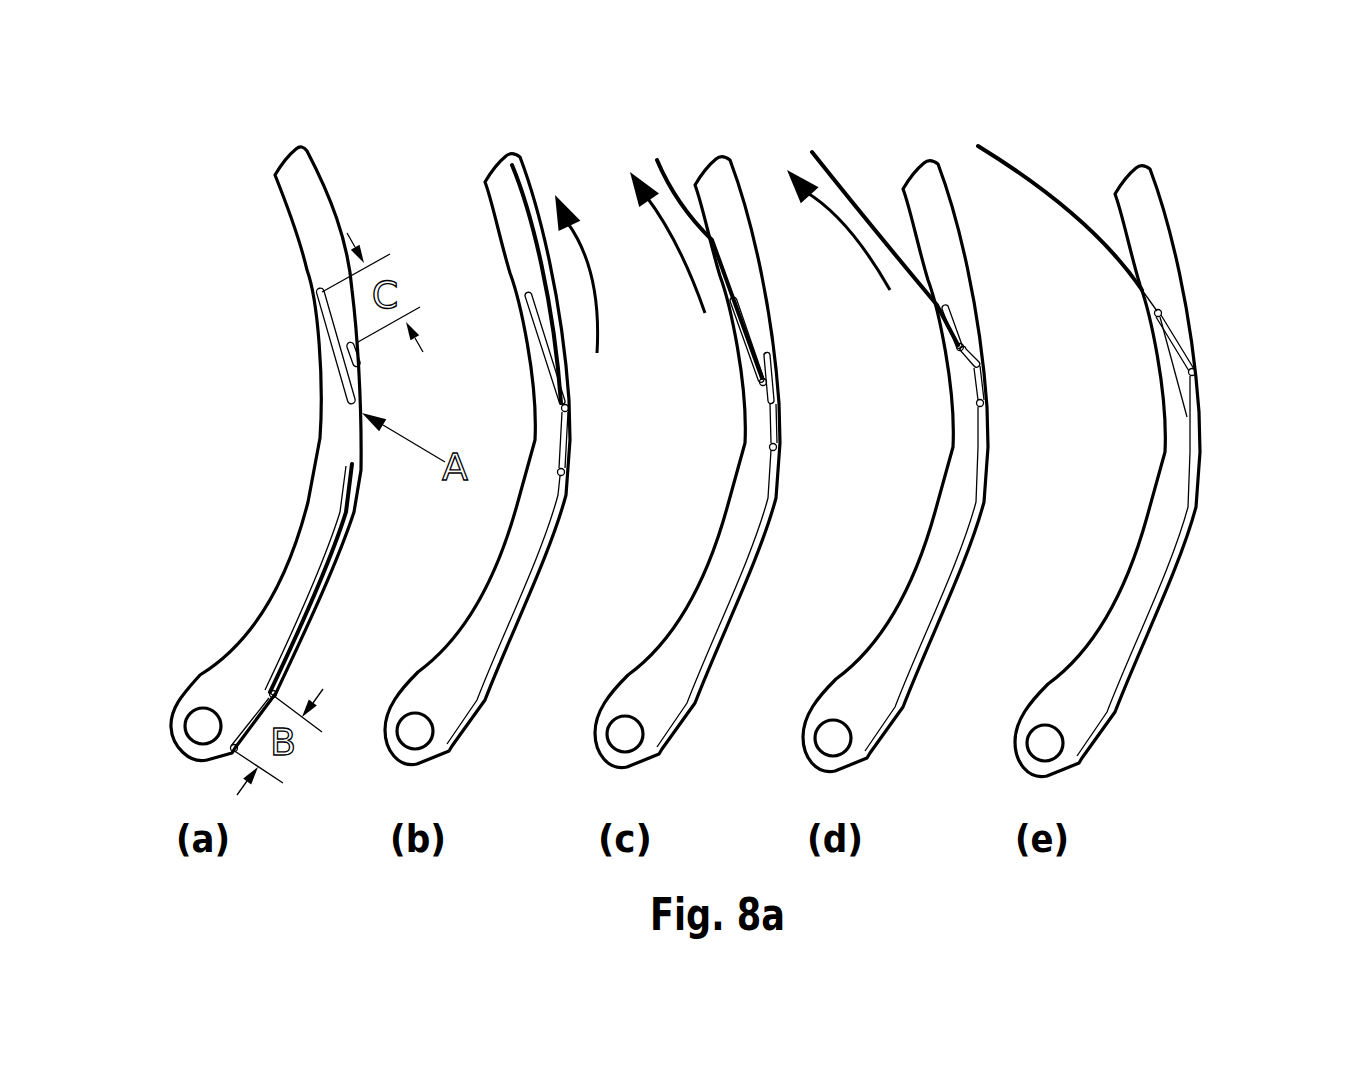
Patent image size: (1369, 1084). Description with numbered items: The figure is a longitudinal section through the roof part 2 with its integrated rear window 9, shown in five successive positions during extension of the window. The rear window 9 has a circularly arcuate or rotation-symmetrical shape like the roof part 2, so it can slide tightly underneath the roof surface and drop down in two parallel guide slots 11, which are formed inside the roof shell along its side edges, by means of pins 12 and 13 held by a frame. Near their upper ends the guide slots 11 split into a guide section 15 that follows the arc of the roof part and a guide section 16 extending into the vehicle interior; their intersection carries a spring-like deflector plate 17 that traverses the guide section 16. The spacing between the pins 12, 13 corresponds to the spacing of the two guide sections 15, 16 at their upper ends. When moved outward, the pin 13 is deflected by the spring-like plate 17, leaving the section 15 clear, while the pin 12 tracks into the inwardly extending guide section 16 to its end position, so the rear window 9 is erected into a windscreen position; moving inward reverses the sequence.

The roof part 2 is at (312, 197).
The rear window 9 is at (334, 592).
The guide slots 11 is at (925, 646).
The pin 12 is at (230, 750).
The pin 13 is at (271, 690).
The guide section 15 is at (360, 360).
The guide section 16 is at (330, 318).
The spring-like deflector plate 17 is at (556, 352).